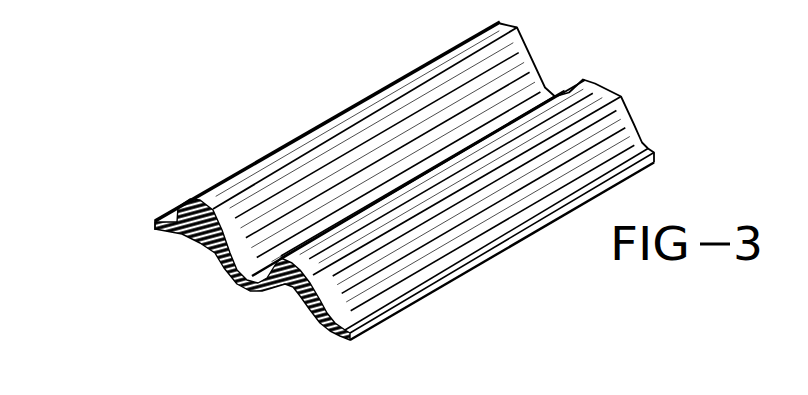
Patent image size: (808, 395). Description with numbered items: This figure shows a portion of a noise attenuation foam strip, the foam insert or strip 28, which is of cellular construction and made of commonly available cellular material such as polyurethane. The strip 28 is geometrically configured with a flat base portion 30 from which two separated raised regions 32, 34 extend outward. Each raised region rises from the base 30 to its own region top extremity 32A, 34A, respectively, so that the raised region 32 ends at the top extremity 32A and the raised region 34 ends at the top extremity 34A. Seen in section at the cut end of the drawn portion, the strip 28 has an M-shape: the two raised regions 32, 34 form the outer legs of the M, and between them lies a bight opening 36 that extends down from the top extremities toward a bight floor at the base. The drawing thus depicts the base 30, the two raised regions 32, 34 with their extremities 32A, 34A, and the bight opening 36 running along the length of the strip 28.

The foam insert or strip 28 is at (300, 113).
The flat base portion 30 is at (242, 272).
The raised region 32 is at (303, 303).
The region top extremity 32A is at (372, 224).
The raised region 34 is at (193, 234).
The region top extremity 34A is at (268, 170).
The bight opening 36 is at (556, 89).